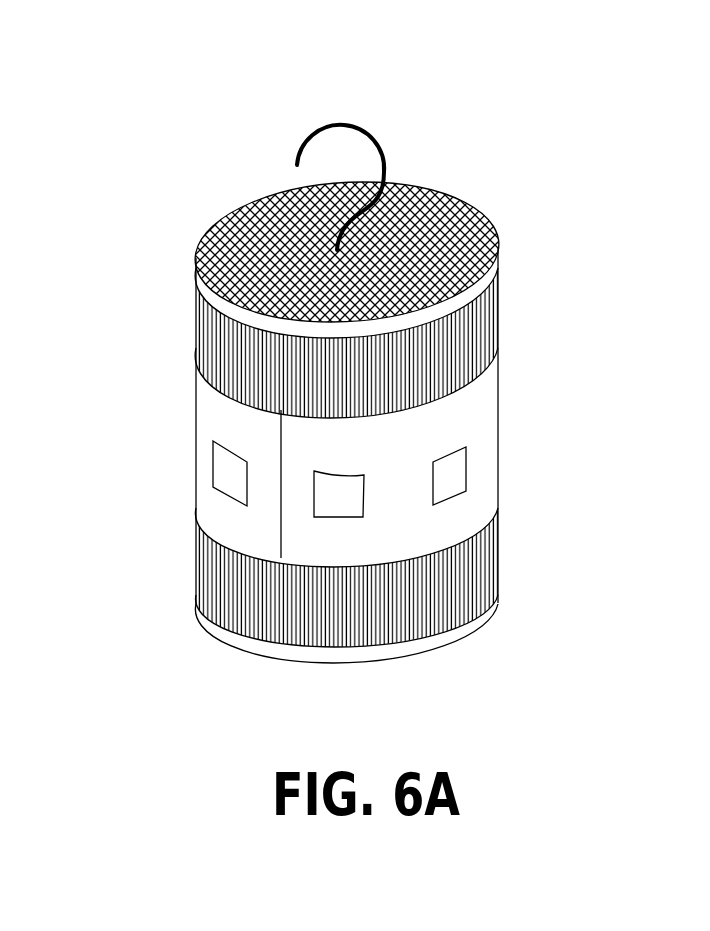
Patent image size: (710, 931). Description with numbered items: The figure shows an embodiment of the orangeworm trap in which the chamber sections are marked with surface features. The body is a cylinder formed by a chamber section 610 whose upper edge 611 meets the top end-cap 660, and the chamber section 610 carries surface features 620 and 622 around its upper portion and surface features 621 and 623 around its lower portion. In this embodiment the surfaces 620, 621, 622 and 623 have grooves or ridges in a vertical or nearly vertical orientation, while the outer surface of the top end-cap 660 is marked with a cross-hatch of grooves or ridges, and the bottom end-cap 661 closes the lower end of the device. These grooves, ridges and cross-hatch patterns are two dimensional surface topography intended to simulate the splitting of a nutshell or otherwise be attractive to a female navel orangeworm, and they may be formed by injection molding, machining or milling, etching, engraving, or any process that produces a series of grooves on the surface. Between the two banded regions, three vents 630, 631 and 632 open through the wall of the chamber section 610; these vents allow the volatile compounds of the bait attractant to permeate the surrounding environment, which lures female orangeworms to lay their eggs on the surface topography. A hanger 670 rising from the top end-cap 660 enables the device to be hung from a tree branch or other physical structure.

The chamber section 610 is at (195, 295).
The top rim 611 is at (500, 288).
The surface feature 620 is at (227, 352).
The surface feature 621 is at (255, 574).
The surface feature 622 is at (448, 357).
The surface feature 623 is at (425, 590).
The vent 630 is at (225, 480).
The vent 631 is at (342, 500).
The vent 632 is at (443, 473).
The top end-cap 660 is at (308, 255).
The bottom end-cap 661 is at (363, 662).
The hanger 670 is at (372, 138).